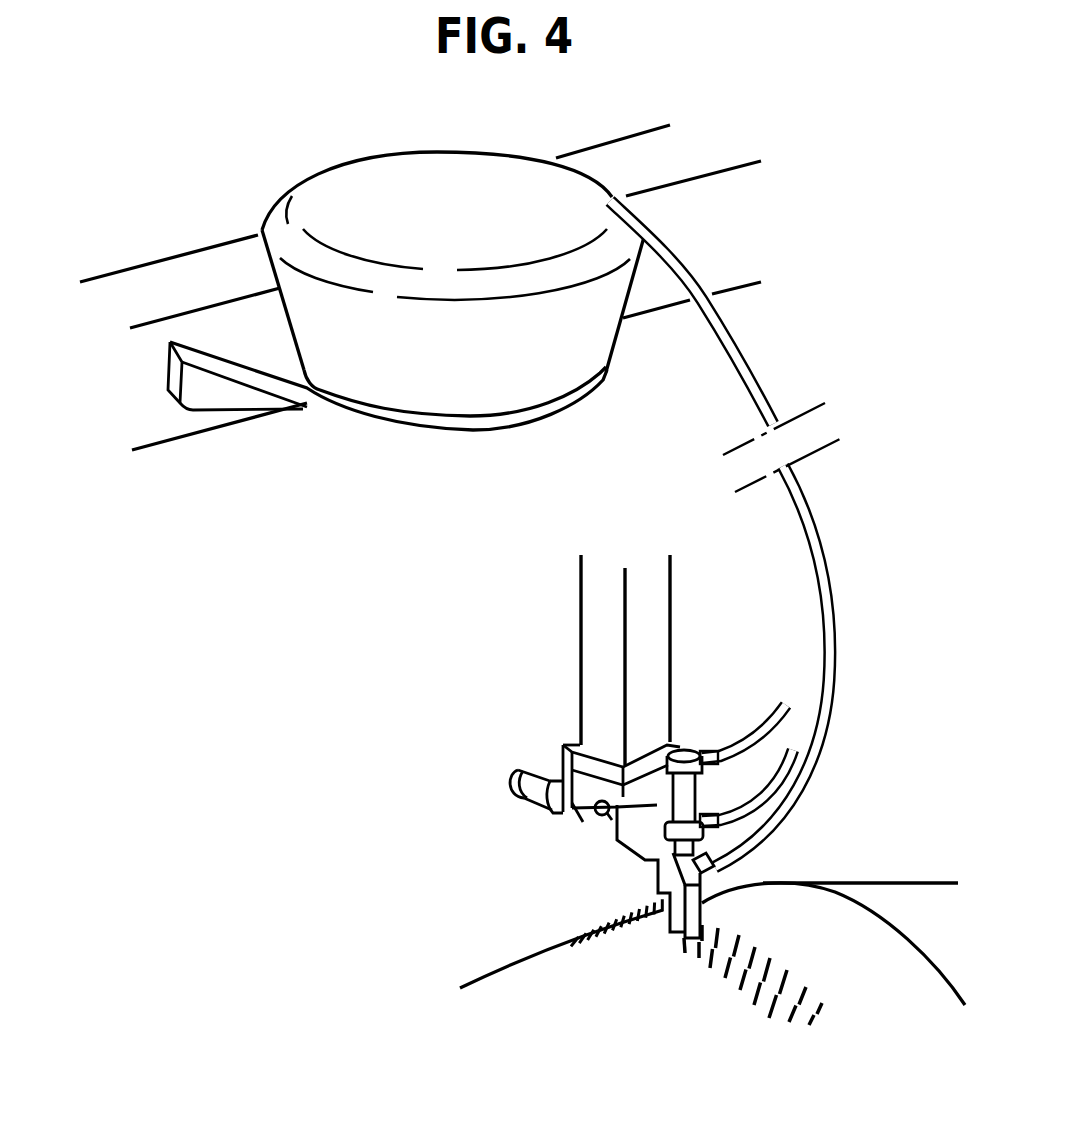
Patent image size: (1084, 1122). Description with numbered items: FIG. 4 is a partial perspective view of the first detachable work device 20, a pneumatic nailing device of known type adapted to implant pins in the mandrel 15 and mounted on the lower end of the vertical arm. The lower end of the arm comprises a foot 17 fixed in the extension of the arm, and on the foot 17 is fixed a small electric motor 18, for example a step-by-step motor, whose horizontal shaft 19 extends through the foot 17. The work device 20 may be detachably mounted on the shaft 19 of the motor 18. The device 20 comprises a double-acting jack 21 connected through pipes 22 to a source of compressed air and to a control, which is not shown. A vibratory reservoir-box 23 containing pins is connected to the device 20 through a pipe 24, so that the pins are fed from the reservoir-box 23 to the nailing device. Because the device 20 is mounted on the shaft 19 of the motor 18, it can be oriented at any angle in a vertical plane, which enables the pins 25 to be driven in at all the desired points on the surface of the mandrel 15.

The mandrel 15 is at (648, 1063).
The foot 17 is at (585, 802).
The electric motor 18 is at (542, 780).
The shaft 19 is at (605, 816).
The first work device 20 is at (630, 869).
The double-acting jack 21 is at (687, 801).
The pipes 22 is at (760, 785).
The vibratory reservoir-box 23 is at (480, 372).
The pipe 24 is at (822, 573).
The pins 25 is at (772, 967).